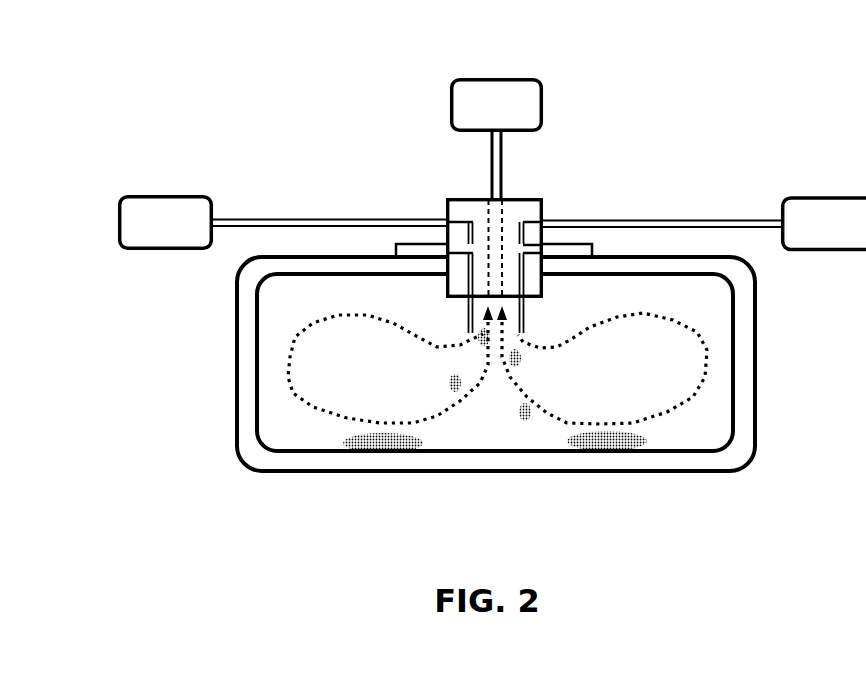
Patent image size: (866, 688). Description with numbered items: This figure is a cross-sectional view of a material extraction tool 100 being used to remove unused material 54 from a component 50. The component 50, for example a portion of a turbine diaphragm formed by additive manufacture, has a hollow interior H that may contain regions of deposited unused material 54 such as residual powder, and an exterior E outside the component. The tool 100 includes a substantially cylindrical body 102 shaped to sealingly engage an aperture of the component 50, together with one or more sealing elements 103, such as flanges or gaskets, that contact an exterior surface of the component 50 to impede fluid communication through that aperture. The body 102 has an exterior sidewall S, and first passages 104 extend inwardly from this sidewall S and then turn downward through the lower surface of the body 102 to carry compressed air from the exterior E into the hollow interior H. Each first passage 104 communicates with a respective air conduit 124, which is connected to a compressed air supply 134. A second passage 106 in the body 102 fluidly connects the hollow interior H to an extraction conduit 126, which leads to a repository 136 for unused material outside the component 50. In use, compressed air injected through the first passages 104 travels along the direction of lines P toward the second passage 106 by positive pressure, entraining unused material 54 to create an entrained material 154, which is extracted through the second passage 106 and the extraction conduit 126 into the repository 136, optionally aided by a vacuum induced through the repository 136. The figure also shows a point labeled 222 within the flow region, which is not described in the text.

The component 50 is at (248, 420).
The unused material 54 is at (378, 442).
The material extraction tool 100 is at (450, 186).
The body 102 is at (530, 273).
The sealing element 103 is at (580, 248).
The first passage 104 is at (470, 270).
The second passage 106 is at (497, 222).
The air conduit 124 is at (243, 217).
The extraction conduit 126 is at (505, 157).
The compressed air supply 134 is at (149, 234).
The repository 136 is at (481, 114).
The entrained material 154 is at (453, 379).
The flow point 222 is at (478, 337).
The lines P is at (420, 340).
The exterior E is at (283, 159).
The hollow interior H is at (284, 316).
The exterior sidewall S is at (446, 213).